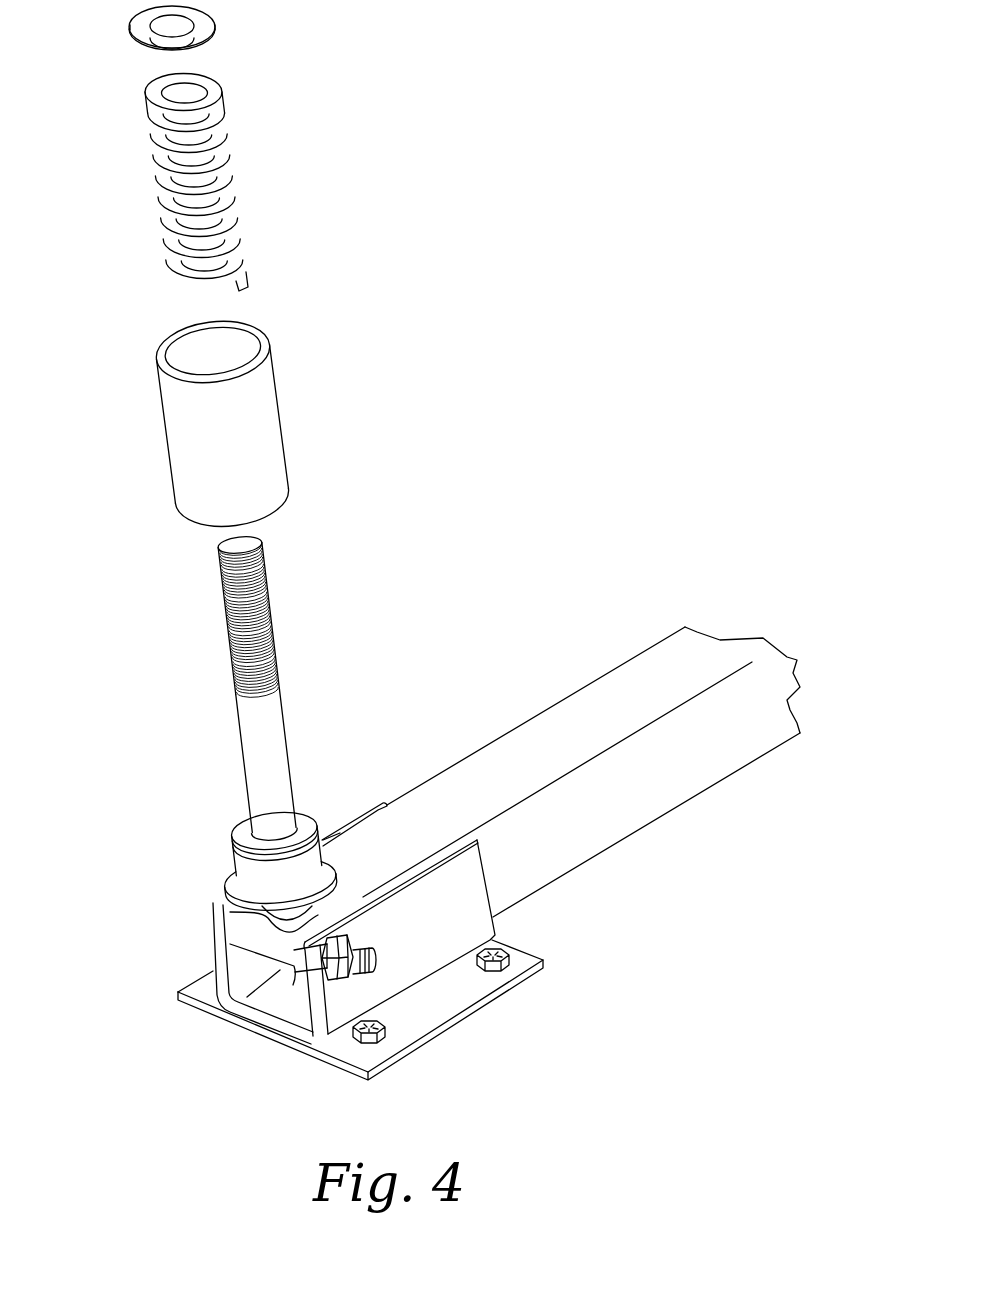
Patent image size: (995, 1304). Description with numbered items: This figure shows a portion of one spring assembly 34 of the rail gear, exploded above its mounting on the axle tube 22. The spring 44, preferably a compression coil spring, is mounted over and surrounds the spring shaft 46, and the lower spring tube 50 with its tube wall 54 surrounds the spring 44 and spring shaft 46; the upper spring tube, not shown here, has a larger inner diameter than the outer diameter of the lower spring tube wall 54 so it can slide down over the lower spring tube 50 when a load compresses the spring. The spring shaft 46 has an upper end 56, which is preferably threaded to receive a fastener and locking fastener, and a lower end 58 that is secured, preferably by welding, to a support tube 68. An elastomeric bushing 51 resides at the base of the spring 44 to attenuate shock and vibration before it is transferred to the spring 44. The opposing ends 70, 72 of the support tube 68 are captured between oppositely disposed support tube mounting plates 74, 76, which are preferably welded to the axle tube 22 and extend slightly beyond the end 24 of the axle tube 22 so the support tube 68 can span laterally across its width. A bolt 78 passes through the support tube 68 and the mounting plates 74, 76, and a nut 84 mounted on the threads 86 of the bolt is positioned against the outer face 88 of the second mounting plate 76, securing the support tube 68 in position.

The axle tube 22 is at (652, 677).
The first end of the axle tube 24 is at (340, 850).
The spring assembly 34 is at (70, 394).
The spring 44 is at (230, 116).
The spring shaft 46 is at (237, 727).
The lower spring tube 50 is at (275, 387).
The elastomeric bushing 51 is at (247, 873).
The lower spring tube wall 54 is at (283, 466).
The upper end of the spring shaft 56 is at (218, 552).
The lower end of the spring shaft 58 is at (237, 828).
The support tube 68 is at (253, 947).
The first end of the support tube 70 is at (230, 912).
The second end of the support tube 72 is at (298, 968).
The first support tube mounting plate 74 is at (368, 805).
The second support tube mounting plate 76 is at (477, 902).
The bolt 78 is at (372, 968).
The nut 84 is at (337, 980).
The threads of the bolt 86 is at (358, 965).
The outer face of the second mounting plate 88 is at (473, 867).